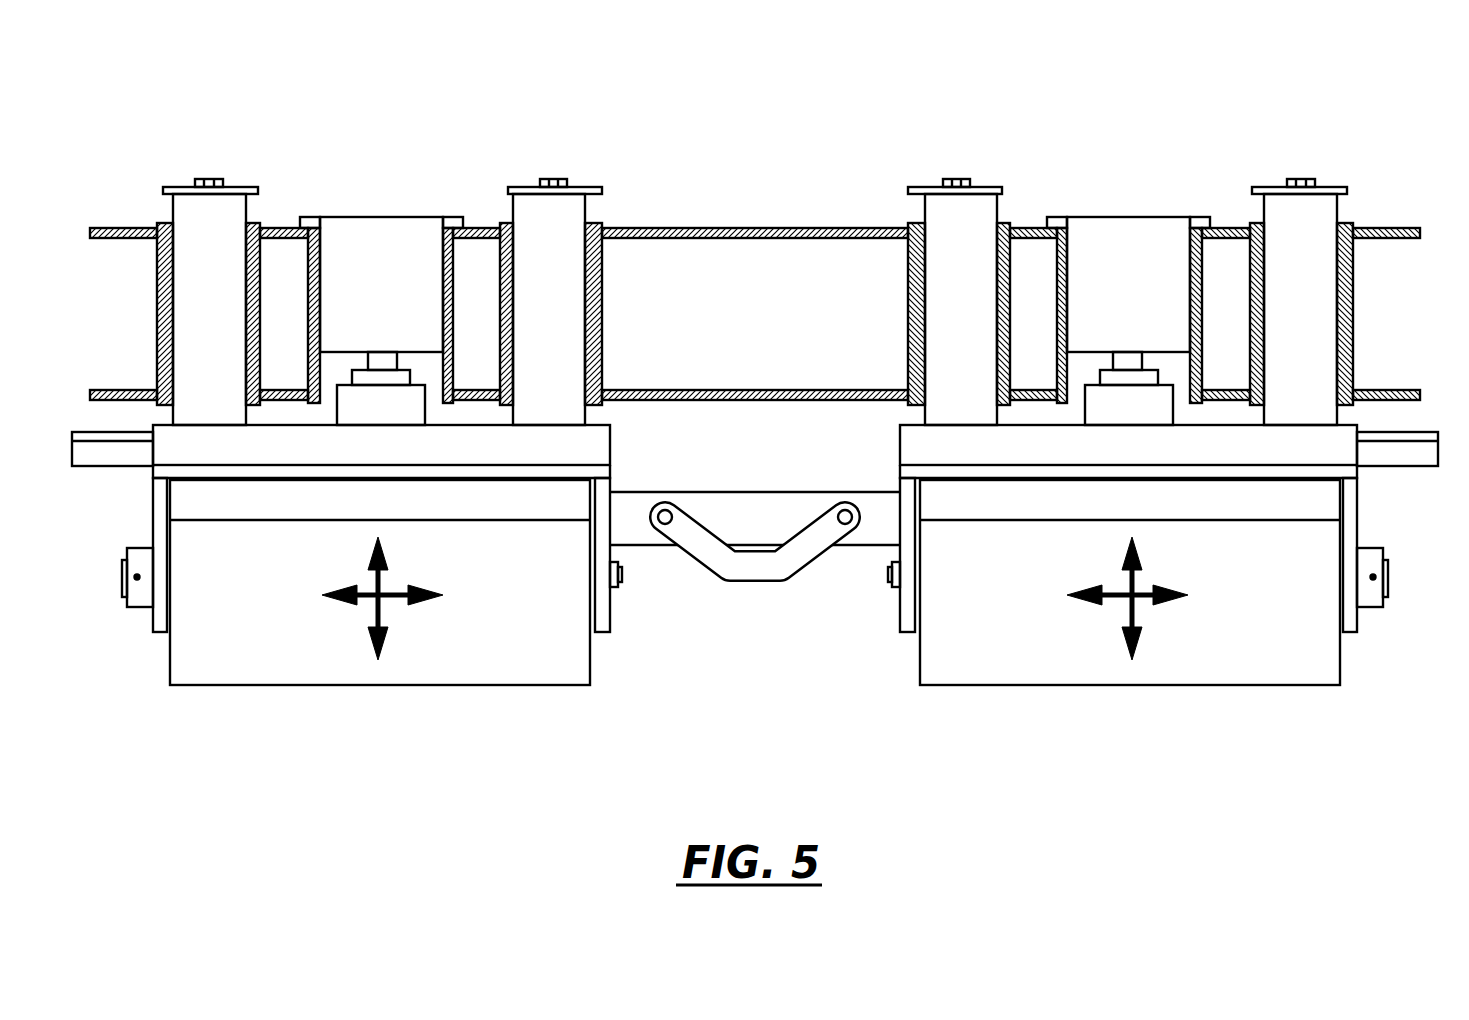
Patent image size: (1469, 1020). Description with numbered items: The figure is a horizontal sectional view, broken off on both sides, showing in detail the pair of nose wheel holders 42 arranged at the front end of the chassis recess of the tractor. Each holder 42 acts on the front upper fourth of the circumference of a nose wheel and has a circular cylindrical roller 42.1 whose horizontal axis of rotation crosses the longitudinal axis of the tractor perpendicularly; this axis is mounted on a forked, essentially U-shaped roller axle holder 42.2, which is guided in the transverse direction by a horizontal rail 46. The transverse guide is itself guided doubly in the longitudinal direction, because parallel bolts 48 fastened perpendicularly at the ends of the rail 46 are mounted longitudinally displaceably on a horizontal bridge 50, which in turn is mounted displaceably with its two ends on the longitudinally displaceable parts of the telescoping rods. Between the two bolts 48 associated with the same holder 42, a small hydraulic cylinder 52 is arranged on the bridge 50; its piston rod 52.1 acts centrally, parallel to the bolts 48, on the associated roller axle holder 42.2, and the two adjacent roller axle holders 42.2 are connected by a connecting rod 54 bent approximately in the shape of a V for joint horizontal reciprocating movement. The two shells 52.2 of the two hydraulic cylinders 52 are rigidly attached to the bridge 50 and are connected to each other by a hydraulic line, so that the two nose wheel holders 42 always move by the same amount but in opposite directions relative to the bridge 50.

The nose wheel holder 42 is at (755, 625).
The circular cylindrical roller 42.1 is at (435, 643).
The roller axle holder 42.2 is at (603, 512).
The horizontal rail 46 is at (117, 455).
The bolt 48 is at (205, 257).
The horizontal bridge 50 is at (752, 228).
The small hydraulic cylinder 52 is at (750, 249).
The piston rod 52.1 is at (387, 360).
The shell 52.2 is at (392, 247).
The connecting rod 54 is at (745, 565).